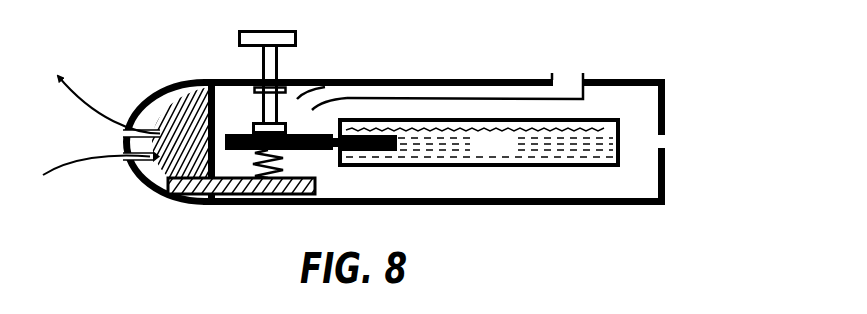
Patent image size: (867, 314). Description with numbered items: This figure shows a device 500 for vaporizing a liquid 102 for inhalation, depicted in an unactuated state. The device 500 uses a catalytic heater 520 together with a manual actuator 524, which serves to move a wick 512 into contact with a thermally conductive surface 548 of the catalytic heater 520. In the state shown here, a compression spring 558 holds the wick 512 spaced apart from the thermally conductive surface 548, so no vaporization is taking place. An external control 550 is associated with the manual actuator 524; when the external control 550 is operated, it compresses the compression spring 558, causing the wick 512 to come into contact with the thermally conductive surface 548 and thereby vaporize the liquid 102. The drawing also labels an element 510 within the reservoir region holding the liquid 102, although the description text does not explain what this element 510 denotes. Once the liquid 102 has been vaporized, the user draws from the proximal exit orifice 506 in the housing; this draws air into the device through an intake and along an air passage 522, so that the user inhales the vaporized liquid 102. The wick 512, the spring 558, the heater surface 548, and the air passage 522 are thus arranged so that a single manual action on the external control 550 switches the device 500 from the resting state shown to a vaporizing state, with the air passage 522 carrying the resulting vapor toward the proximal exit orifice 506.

The device 500 is at (467, 117).
The proximal exit orifice 506 is at (663, 134).
The wick / heater 510 is at (426, 130).
The wick 512 is at (320, 149).
The catalytic heater 520 is at (197, 75).
The air passage 522 is at (492, 86).
The manual actuator 524 is at (240, 95).
The thermally conductive surface 548 is at (239, 195).
The external control 550 is at (297, 36).
The compression spring 558 is at (282, 164).
The liquid 102 is at (479, 109).